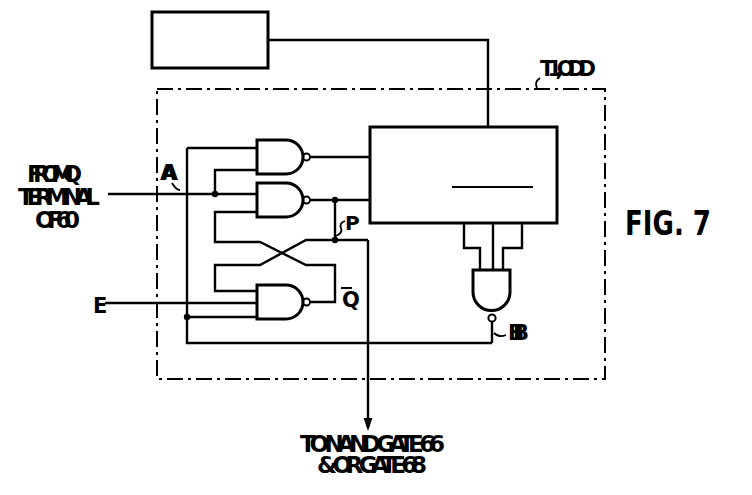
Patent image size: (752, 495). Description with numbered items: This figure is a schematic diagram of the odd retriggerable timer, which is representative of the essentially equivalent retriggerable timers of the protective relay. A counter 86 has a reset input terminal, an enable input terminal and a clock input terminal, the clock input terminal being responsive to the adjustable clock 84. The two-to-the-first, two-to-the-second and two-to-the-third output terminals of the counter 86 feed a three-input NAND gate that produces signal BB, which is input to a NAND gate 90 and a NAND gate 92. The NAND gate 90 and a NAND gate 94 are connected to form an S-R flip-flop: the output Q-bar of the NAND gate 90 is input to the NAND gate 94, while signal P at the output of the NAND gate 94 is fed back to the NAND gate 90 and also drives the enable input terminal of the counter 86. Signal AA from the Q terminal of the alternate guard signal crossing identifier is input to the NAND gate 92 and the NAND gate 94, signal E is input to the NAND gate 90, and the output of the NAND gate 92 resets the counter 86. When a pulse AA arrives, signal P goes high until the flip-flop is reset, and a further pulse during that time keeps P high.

The adjustable clock 84 is at (269, 22).
The counter 86 is at (542, 126).
The NAND gate 90 is at (290, 320).
The NAND gate 92 is at (272, 139).
The NAND gate 94 is at (292, 185).